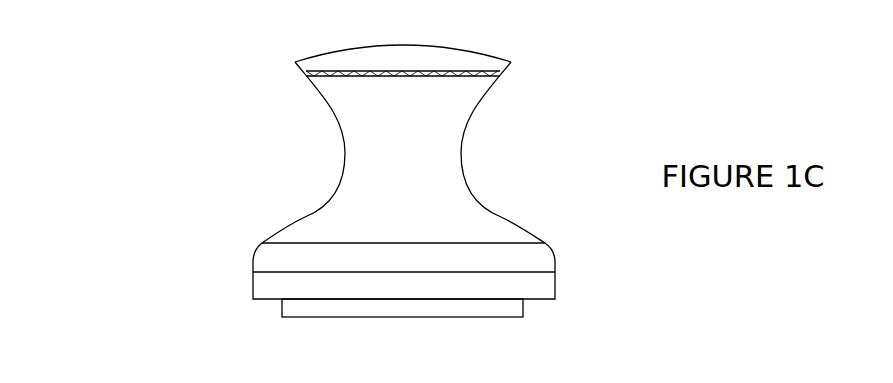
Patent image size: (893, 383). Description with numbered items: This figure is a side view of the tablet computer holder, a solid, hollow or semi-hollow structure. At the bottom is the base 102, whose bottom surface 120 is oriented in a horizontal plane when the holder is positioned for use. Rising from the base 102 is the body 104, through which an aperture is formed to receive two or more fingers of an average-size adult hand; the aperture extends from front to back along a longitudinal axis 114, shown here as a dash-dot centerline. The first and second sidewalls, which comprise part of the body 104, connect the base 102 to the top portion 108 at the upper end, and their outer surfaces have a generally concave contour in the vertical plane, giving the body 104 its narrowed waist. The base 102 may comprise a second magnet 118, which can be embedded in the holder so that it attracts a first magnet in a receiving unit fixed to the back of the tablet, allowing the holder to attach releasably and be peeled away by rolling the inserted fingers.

The base 102 is at (445, 182).
The body 104 is at (417, 188).
The top portion 108 is at (405, 58).
The longitudinal axis 114 is at (543, 153).
The second magnet 118 is at (395, 318).
The bottom surface 120 is at (540, 298).